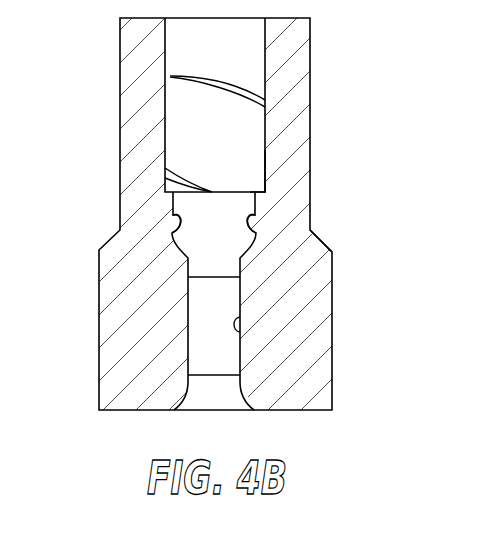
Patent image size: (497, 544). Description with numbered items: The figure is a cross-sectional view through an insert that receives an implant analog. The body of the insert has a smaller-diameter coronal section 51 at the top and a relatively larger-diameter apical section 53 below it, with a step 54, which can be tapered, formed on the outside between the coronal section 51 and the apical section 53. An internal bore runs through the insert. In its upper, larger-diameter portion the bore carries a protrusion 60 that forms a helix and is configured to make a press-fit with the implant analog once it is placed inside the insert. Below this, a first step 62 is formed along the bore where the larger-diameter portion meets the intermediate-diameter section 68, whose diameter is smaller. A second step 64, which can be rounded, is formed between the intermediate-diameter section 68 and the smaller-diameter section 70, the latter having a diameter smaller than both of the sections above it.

The coronal section 51 is at (135, 74).
The apical section 53 is at (115, 333).
The protrusion 60 is at (247, 91).
The first step 62 is at (265, 190).
The second step 64 is at (252, 219).
The intermediate-diameter section 68 is at (173, 233).
The step 54 is at (320, 241).
The smaller-diameter section 70 is at (243, 326).